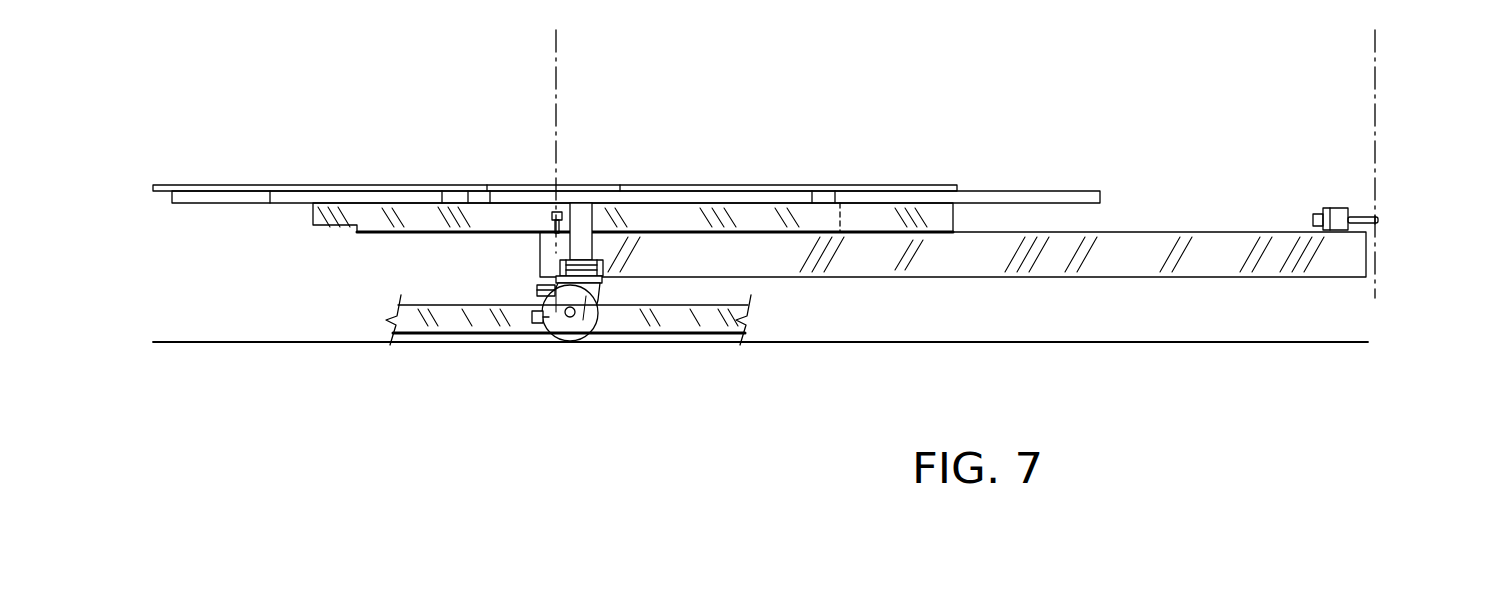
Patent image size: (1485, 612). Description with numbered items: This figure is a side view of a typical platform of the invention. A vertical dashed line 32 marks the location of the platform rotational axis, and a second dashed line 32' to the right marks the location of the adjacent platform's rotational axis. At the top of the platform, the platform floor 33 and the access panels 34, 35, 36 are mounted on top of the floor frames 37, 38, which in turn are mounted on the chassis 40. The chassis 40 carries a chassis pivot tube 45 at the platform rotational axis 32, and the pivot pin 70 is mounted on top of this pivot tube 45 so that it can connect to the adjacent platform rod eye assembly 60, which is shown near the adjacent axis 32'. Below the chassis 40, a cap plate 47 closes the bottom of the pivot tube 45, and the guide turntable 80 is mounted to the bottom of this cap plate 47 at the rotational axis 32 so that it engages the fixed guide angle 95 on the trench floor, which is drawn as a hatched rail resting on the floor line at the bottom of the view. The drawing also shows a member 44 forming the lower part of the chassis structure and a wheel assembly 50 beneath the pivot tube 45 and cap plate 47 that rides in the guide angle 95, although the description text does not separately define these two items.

The platform rotational axis line 32 is at (604, 141).
The adjacent platform rotational axis line 32' is at (1423, 164).
The platform floor 33 is at (555, 126).
The access panel 34 is at (555, 126).
The access panel 35 is at (555, 126).
The access panel 36 is at (912, 185).
The floor frame 37 is at (636, 132).
The floor frame 38 is at (287, 195).
The chassis 40 is at (990, 169).
The base member 44 is at (1165, 230).
The chassis pivot tube 45 is at (556, 245).
The cap plate 47 is at (556, 274).
The caster assembly 50 is at (585, 369).
The rod eye assembly 60 is at (1328, 168).
The pivot pin 70 is at (552, 216).
The guide turntable 80 is at (530, 314).
The fixed guide angle 95 is at (693, 325).